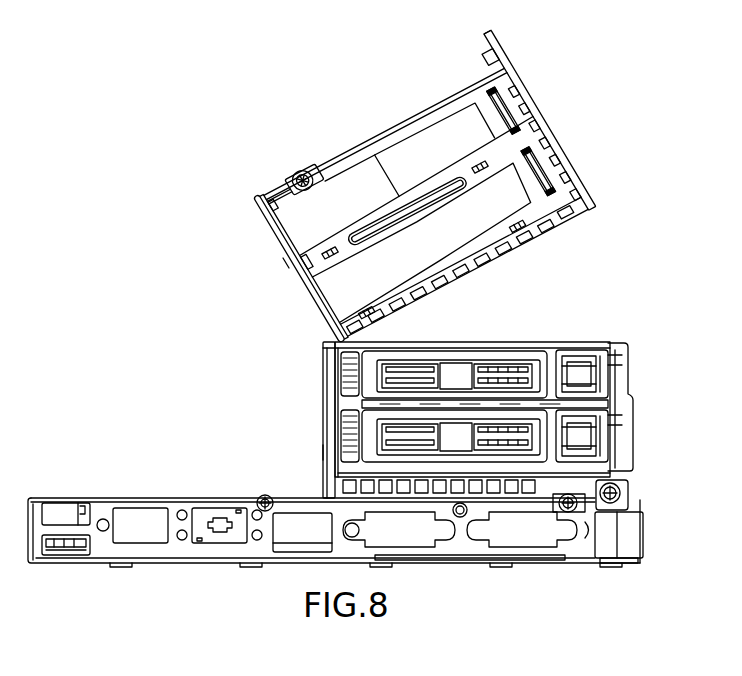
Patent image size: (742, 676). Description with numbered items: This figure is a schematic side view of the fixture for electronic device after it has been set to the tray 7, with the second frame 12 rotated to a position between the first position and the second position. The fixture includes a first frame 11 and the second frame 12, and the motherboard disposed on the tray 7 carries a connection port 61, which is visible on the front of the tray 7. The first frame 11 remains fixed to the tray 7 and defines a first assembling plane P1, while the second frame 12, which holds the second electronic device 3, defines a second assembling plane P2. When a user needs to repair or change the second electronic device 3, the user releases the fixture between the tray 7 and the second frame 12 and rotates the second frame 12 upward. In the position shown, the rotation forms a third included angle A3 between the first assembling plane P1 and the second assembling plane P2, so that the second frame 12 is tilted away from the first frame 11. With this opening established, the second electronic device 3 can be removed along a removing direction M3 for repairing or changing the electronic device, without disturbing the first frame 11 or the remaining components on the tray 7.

The second electronic device 3 is at (385, 171).
The second frame 12 is at (566, 138).
The first frame 11 is at (638, 378).
The tray 7 is at (646, 543).
The connection port 61 is at (63, 514).
The first assembling plane P1 is at (323, 452).
The second assembling plane P2 is at (283, 264).
The third included angle A3 is at (303, 306).
The removing direction M3 is at (200, 292).